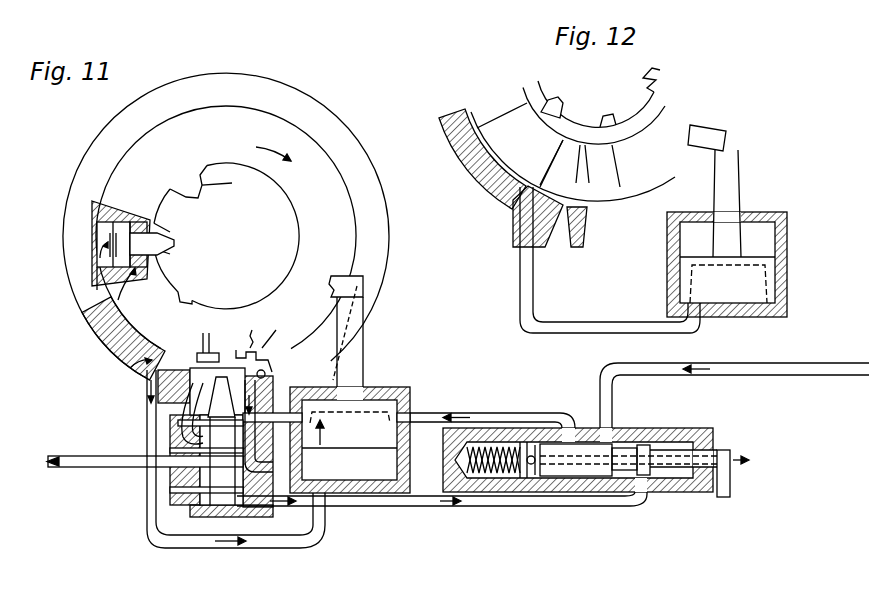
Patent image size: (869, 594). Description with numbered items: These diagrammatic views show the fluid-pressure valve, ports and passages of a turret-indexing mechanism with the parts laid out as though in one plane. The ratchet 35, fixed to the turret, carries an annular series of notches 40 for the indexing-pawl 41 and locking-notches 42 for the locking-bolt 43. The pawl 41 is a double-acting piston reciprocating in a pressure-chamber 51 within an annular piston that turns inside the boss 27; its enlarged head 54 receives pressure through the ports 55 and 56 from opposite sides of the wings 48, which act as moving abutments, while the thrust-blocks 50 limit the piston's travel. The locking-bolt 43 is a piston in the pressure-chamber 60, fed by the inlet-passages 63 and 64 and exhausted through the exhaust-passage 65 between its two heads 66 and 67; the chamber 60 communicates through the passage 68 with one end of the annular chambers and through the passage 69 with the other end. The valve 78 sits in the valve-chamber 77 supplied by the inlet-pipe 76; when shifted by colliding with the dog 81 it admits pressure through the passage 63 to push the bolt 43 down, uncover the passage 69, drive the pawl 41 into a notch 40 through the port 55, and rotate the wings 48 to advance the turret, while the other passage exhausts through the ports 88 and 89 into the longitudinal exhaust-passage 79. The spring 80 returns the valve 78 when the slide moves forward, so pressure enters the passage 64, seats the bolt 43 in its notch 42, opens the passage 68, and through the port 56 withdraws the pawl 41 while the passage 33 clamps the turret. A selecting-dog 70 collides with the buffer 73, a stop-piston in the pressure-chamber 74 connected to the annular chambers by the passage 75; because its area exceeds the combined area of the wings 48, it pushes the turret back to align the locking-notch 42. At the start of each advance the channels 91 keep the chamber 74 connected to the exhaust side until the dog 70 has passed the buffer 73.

In FIG. 11, the boss 27 is at (77, 153).
In FIG. 11, the passage 33 is at (247, 365).
In FIG. 11, the ratchet 35 is at (212, 181).
In FIG. 12, the ratchet 35 is at (655, 101).
In FIG. 11, the notches 40 is at (193, 193).
In FIG. 12, the notches 40 is at (612, 120).
In FIG. 11, the indexing-pawl 41 is at (172, 247).
In FIG. 12, the indexing-pawl 41 is at (552, 115).
In FIG. 11, the locking-notches 42 is at (207, 357).
In FIG. 11, the locking-bolt 43 is at (200, 423).
In FIG. 11, the wings 48 is at (118, 209).
In FIG. 12, the wings 48 is at (500, 114).
In FIG. 11, the thrust-blocks 50 is at (204, 338).
In FIG. 12, the thrust-blocks 50 is at (602, 196).
In FIG. 11, the pressure-chamber 51 is at (102, 228).
In FIG. 11, the enlarged head 54 is at (122, 257).
In FIG. 11, the port 55 is at (97, 276).
In FIG. 11, the port 56 is at (133, 221).
In FIG. 11, the pressure-chamber 60 is at (205, 477).
In FIG. 11, the inlet-passage 63 is at (493, 414).
In FIG. 11, the inlet-passage 64 is at (420, 508).
In FIG. 11, the exhaust-passage 65 is at (95, 460).
In FIG. 11, the head 66 is at (205, 452).
In FIG. 11, the head 67 is at (210, 491).
In FIG. 11, the passage 68 is at (282, 395).
In FIG. 11, the passage 69 is at (160, 411).
In FIG. 11, the selecting-dogs 70 is at (357, 290).
In FIG. 12, the selecting-dogs 70 is at (712, 135).
In FIG. 11, the buffer 73 is at (365, 361).
In FIG. 12, the buffer 73 is at (733, 188).
In FIG. 11, the pressure-chamber 74 is at (357, 472).
In FIG. 12, the pressure-chamber 74 is at (777, 240).
In FIG. 11, the passage 75 is at (283, 549).
In FIG. 11, the inlet-pipe 76 is at (748, 376).
In FIG. 11, the valve-chamber 77 is at (672, 492).
In FIG. 11, the valve 78 is at (648, 445).
In FIG. 11, the exhaust-passage 79 is at (680, 452).
In FIG. 11, the spring 80 is at (492, 480).
In FIG. 11, the dog 81 is at (731, 488).
In FIG. 11, the port 88 is at (533, 478).
In FIG. 11, the port 89 is at (637, 442).
In FIG. 11, the channels 91 is at (80, 334).